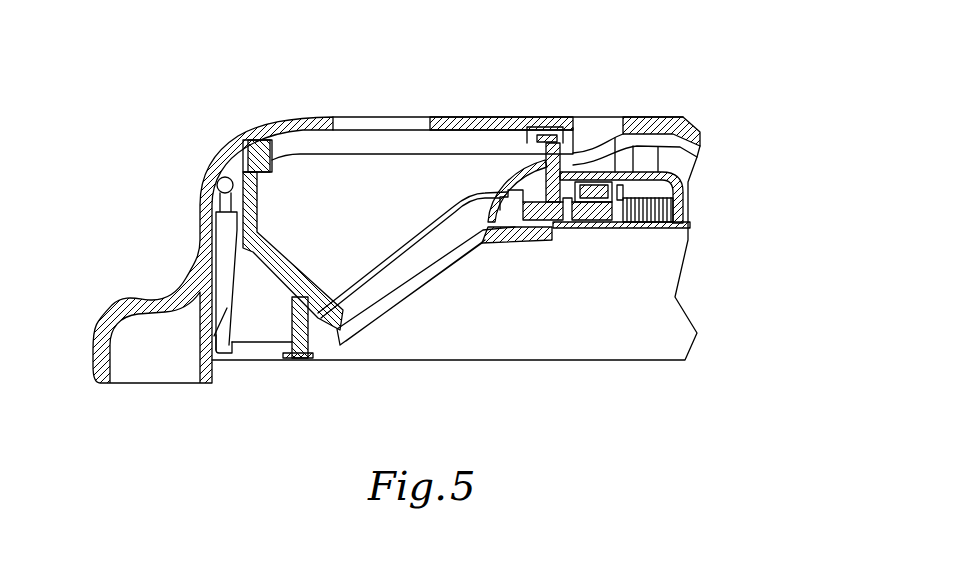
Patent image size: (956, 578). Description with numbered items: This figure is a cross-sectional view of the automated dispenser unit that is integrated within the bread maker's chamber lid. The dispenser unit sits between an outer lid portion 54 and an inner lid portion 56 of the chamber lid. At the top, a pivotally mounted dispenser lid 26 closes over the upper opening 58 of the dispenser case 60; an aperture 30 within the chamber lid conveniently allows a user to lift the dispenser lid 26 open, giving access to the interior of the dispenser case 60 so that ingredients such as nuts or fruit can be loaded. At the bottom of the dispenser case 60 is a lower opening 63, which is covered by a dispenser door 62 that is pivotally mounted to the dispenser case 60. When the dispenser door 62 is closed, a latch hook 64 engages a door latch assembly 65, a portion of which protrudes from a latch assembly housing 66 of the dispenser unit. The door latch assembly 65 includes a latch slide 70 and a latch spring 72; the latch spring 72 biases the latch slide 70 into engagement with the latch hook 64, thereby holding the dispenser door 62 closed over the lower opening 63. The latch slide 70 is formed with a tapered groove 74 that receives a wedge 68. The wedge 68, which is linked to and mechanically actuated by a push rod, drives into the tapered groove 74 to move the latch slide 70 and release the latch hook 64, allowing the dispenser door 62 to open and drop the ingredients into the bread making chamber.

The dispenser lid 26 is at (315, 124).
The aperture 30 is at (583, 132).
The outer lid portion 54 is at (677, 117).
The inner lid portion 56 is at (643, 228).
The upper opening 58 is at (383, 152).
The dispenser case 60 is at (255, 252).
The dispenser door 62 is at (440, 270).
The lower opening 63 is at (413, 258).
The latch hook 64 is at (523, 172).
The door latch assembly 65 is at (577, 243).
The latch assembly housing 66 is at (684, 179).
The wedge 68 is at (594, 183).
The latch slide 70 is at (588, 229).
The latch spring 72 is at (667, 230).
The tapered groove 74 is at (600, 231).